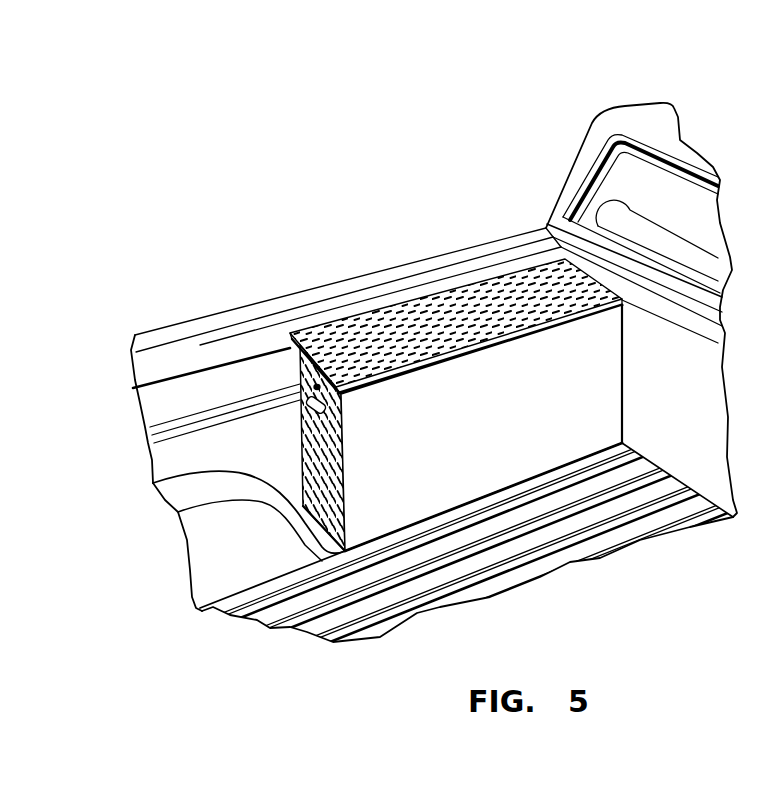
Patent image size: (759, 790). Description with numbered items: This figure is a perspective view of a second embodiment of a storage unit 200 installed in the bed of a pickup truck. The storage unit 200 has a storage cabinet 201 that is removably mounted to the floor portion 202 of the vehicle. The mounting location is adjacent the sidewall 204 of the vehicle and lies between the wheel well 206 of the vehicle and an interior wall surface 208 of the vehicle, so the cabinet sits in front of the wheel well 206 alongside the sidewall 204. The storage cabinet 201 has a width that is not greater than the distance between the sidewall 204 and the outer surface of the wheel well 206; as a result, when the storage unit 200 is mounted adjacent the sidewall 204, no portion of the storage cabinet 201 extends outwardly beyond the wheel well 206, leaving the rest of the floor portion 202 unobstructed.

The storage unit 200 is at (502, 405).
The storage cabinet 201 is at (500, 424).
The floor portion 202 is at (390, 597).
The sidewall 204 is at (268, 456).
The wheel well 206 is at (203, 567).
The interior wall surface 208 is at (697, 370).